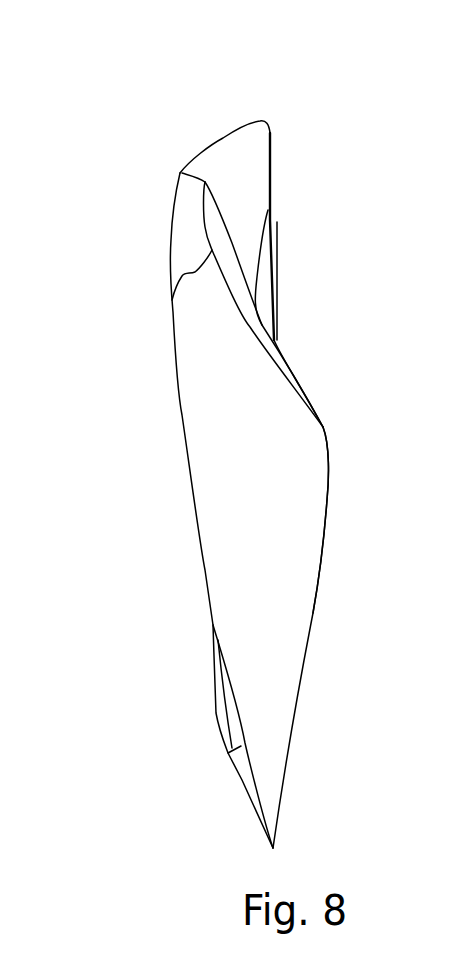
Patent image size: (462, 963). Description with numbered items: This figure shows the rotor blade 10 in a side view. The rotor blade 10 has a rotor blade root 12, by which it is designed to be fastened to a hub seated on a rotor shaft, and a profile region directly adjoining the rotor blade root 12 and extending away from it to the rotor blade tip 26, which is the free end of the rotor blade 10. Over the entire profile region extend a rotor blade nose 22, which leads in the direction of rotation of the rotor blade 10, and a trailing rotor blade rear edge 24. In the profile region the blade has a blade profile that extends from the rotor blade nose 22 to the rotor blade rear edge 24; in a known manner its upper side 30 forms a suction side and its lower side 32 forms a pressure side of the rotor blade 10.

The rotor blade 10 is at (178, 543).
The rotor blade root 12 is at (278, 263).
The rotor blade nose 22 is at (223, 138).
The rotor blade rear edge 24 is at (317, 613).
The rotor blade tip 26 is at (253, 322).
The upper side 30 is at (242, 588).
The lower side 32 is at (245, 157).